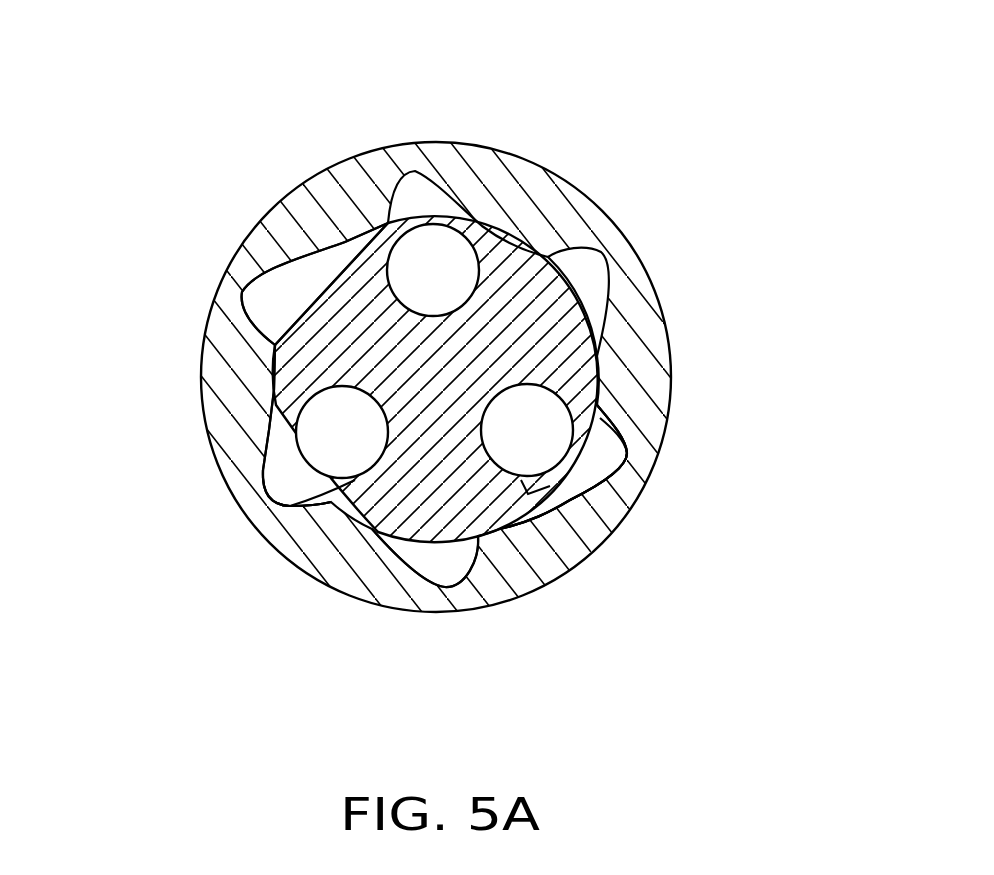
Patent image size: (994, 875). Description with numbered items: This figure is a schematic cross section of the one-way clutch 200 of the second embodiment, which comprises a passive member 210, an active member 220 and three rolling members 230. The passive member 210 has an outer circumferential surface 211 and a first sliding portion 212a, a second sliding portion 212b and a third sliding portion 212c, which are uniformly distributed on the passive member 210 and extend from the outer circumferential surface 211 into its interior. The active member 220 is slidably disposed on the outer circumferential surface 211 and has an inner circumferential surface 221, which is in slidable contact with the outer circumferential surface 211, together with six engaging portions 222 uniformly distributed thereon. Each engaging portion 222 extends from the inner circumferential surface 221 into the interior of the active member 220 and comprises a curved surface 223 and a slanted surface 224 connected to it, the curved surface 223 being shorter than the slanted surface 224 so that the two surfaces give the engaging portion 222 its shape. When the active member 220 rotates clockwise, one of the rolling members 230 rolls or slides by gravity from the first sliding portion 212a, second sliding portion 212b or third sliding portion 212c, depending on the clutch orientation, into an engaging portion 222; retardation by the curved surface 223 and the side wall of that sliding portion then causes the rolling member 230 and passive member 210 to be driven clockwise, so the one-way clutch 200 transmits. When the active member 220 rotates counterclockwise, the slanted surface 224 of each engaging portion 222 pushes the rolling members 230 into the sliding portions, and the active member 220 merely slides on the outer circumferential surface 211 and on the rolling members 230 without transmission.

The one-way clutch 200 is at (86, 53).
The passive member 210 is at (442, 350).
The outer circumferential surface 211 is at (579, 300).
The first sliding portion 212a is at (612, 535).
The second sliding portion 212b is at (388, 223).
The third sliding portion 212c is at (300, 490).
The active member 220 is at (437, 377).
The inner circumferential surface 221 is at (284, 357).
The engaging portion 222 is at (282, 292).
The curved surface 223 is at (628, 448).
The slanted surface 224 is at (580, 490).
The rolling member 230 is at (447, 265).